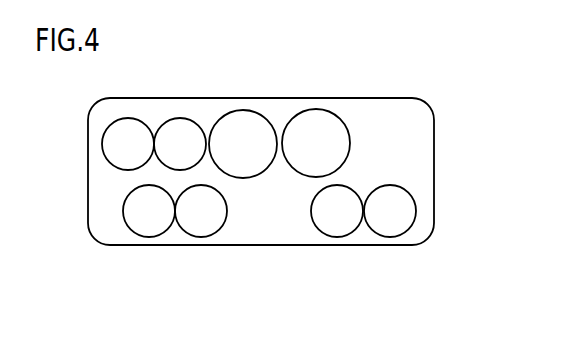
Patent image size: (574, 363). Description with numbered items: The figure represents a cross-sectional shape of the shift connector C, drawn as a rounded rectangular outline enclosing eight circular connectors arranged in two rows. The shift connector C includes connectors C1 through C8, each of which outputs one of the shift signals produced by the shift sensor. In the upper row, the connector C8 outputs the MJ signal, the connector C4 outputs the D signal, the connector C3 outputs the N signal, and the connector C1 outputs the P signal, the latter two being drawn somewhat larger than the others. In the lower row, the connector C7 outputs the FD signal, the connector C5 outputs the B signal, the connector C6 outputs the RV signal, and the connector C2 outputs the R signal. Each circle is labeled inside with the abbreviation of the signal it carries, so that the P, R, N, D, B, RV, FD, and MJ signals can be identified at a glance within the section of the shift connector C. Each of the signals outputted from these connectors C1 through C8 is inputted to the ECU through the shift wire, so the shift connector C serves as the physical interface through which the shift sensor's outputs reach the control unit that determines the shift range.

The shift connector C is at (434, 168).
The connector C1 is at (314, 109).
The connector C2 is at (390, 237).
The connector C3 is at (243, 110).
The connector C4 is at (180, 118).
The connector C5 is at (201, 237).
The connector C6 is at (337, 237).
The connector C7 is at (149, 237).
The connector C8 is at (128, 118).